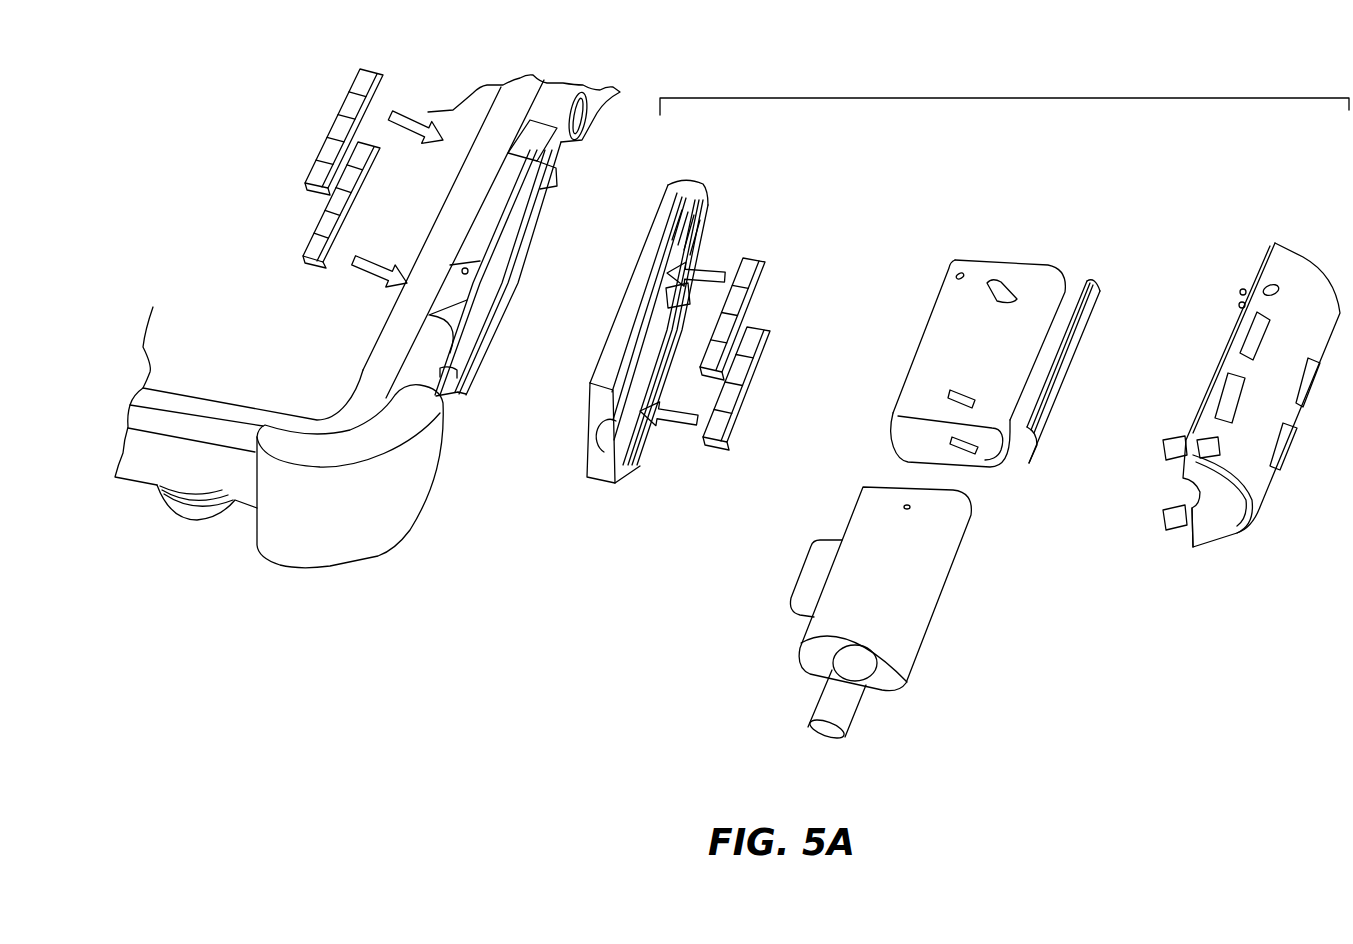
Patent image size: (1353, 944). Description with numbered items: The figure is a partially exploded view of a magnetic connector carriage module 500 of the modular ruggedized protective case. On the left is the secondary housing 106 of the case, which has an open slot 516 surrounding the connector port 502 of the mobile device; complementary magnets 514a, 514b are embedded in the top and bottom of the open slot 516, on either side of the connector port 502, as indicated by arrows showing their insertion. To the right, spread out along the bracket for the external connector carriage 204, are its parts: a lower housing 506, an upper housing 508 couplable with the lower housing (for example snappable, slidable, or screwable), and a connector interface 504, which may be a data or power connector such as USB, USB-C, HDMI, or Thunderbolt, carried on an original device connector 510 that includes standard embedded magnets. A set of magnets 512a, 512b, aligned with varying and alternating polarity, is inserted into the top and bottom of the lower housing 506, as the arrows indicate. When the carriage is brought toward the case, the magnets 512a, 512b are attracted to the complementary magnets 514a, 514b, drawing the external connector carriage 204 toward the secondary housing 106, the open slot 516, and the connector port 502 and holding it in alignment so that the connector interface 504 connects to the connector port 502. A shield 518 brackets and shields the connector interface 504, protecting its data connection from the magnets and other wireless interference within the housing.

The magnetic connector carriage module 500 is at (176, 108).
The secondary housing 106 is at (175, 452).
The external connector carriage 204 is at (1000, 98).
The connector port 502 is at (523, 318).
The connector interface 504 is at (806, 573).
The lower housing 506 is at (603, 475).
The upper housing 508 is at (1293, 280).
The original device connector 510 is at (927, 582).
The magnet 512a is at (752, 266).
The magnet 512b is at (756, 340).
The complementary magnet 514a is at (318, 173).
The complementary magnet 514b is at (318, 248).
The open slot 516 is at (510, 250).
The shield 518 is at (1027, 287).